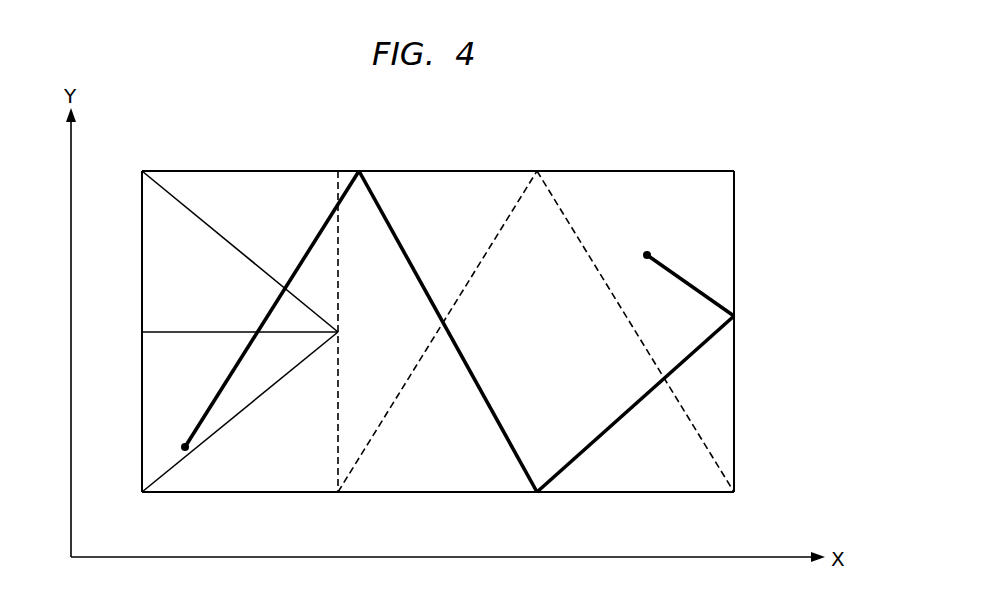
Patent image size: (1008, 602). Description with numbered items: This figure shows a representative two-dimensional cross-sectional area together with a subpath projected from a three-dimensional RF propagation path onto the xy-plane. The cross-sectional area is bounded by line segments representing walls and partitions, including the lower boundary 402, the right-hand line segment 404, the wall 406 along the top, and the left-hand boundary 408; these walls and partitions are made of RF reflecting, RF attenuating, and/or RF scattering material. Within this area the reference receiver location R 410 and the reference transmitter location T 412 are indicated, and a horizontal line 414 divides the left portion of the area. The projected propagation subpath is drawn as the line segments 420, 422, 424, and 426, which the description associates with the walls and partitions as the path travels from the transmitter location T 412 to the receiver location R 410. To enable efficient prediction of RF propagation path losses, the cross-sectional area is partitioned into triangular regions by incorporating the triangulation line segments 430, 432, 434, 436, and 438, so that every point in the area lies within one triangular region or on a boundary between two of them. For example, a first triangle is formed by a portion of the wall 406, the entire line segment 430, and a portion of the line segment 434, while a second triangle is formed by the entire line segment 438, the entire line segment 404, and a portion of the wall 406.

The bottom wall of room 402 is at (449, 493).
The line segment 404 is at (736, 259).
The wall 406 is at (232, 171).
The left wall of room 408 is at (141, 262).
The reference receiver location R 410 is at (647, 262).
The reference transmitter location T 412 is at (181, 447).
The horizontal reference line 414 is at (290, 333).
The line segment 420 is at (285, 282).
The line segment 422 is at (420, 269).
The line segment 424 is at (594, 430).
The line segment 426 is at (677, 276).
The triangulation line segment 430 is at (214, 223).
The triangulation line segment 432 is at (245, 416).
The triangulation line segment 434 is at (340, 258).
The triangulation line segment 436 is at (396, 398).
The triangulation line segment 438 is at (555, 190).